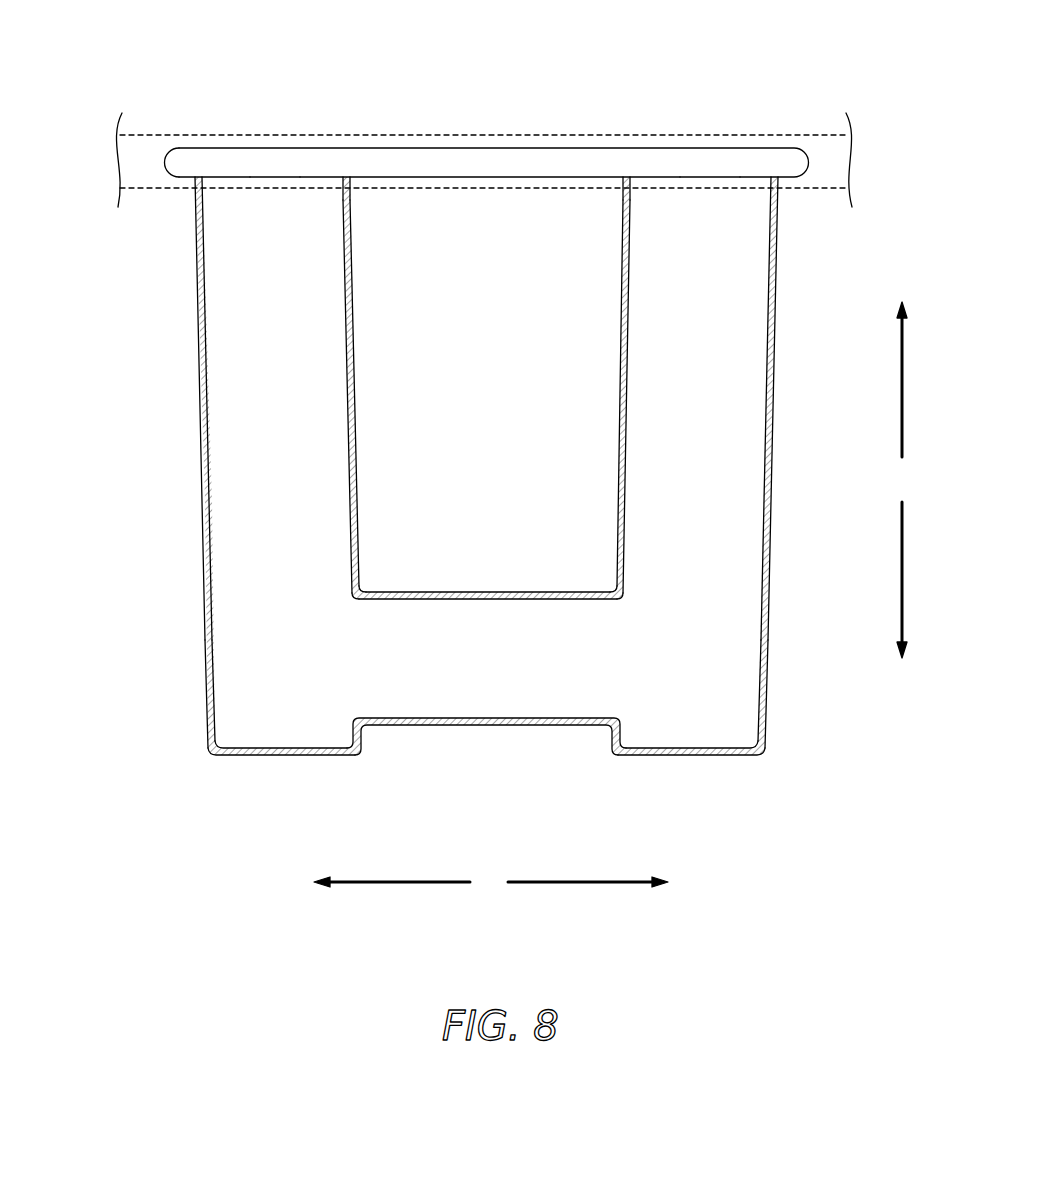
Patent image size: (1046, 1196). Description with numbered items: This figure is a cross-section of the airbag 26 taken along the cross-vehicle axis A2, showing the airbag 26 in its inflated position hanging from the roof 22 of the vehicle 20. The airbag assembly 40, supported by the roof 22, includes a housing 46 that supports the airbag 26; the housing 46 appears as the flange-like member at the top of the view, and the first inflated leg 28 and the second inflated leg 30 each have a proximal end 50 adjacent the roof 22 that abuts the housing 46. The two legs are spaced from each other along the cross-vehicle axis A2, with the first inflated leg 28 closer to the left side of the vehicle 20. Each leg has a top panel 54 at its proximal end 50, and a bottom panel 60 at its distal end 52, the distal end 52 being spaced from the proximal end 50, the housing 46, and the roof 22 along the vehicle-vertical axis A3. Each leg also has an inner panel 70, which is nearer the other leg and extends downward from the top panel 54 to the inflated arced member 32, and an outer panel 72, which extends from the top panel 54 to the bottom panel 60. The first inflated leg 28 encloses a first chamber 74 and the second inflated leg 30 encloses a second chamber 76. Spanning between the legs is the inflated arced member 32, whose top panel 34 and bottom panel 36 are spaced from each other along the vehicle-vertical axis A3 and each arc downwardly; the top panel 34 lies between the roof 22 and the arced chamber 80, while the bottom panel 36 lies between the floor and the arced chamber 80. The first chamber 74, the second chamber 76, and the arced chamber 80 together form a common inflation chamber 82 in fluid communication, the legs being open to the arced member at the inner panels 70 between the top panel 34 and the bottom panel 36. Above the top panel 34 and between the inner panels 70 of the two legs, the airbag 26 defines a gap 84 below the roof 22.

The vehicle 20 is at (276, 68).
The roof 22 is at (170, 135).
The airbag 26 is at (126, 347).
The first inflated leg 28 is at (772, 428).
The second inflated leg 30 is at (202, 428).
The inflated arced member 32 is at (443, 593).
The top panel 34 is at (537, 593).
The bottom panel 36 is at (442, 725).
The airbag assembly 40 is at (600, 132).
The housing 46 is at (167, 163).
The proximal end 50 is at (348, 188).
The distal end 52 is at (207, 700).
The top panel 54 is at (282, 178).
The bottom panel 60 is at (261, 755).
The inner panel 70 is at (355, 372).
The outer panel 72 is at (203, 476).
The first chamber 74 is at (744, 490).
The second chamber 76 is at (228, 532).
The arced chamber 80 is at (235, 320).
The common inflation chamber 82 is at (332, 493).
The gap 84 is at (448, 255).
The cross-vehicle axis A2 is at (491, 883).
The vehicle-vertical axis A3 is at (906, 480).